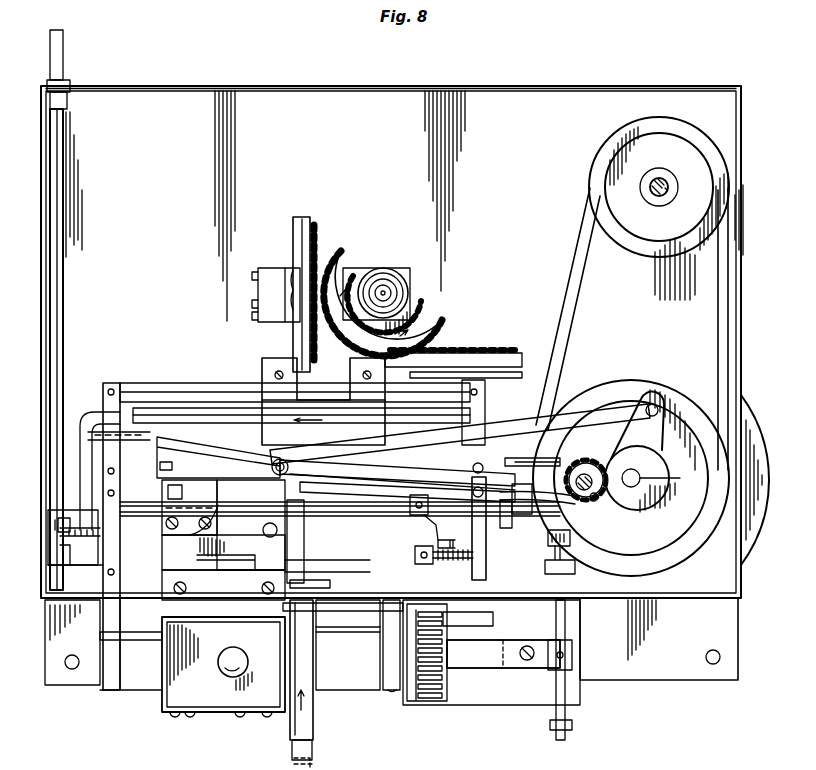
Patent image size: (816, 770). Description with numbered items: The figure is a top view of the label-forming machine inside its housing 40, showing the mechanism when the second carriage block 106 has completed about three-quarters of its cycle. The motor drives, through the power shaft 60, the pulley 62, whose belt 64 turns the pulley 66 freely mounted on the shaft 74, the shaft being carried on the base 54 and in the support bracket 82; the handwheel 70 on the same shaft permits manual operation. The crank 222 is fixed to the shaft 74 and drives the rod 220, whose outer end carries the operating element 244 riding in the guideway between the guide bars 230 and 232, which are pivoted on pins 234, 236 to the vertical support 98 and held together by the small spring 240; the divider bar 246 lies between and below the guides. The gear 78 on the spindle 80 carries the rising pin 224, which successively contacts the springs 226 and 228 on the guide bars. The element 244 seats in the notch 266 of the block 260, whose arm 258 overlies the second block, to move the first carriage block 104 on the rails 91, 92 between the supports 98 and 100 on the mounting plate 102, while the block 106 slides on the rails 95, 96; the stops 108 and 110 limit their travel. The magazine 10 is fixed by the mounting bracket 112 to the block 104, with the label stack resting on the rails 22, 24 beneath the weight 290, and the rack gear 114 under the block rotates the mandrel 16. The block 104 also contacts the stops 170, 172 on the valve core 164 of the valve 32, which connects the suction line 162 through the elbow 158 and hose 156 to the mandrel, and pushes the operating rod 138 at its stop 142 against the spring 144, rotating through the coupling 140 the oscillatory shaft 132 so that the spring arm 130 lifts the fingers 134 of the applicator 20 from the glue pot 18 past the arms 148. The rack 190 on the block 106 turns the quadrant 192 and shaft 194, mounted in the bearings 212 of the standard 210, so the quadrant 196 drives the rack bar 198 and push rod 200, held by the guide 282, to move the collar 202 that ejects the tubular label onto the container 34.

The magazine 10 is at (177, 725).
The rotary mandrel 16 is at (302, 673).
The glue pot 18 is at (582, 655).
The glue applicator 20 is at (318, 606).
The rail 22 is at (352, 690).
The rail 24 is at (345, 632).
The valve 32 is at (64, 533).
The container 34 is at (314, 758).
The housing 40 is at (271, 78).
The base 54 is at (183, 102).
The power shaft 60 is at (658, 194).
The pulley 62 is at (652, 240).
The belt 64 is at (567, 299).
The pulley 66 is at (682, 553).
The handwheel 70 is at (757, 515).
The shaft 74 is at (660, 477).
The gear 78 is at (587, 472).
The spindle 80 is at (580, 470).
The support bracket 82 is at (525, 500).
The rail 91 is at (150, 590).
The rail 92 is at (218, 496).
The rail 95 is at (166, 385).
The rail 96 is at (225, 474).
The vertical support 98 is at (486, 573).
The vertical support 100 is at (114, 385).
The mounting plate 102 is at (466, 404).
The first carriage block 104 is at (292, 558).
The second carriage block 106 is at (378, 420).
The adjustable stop screw 108 is at (90, 548).
The stop 110 is at (95, 440).
The mounting bracket 112 is at (205, 625).
The rack gear 114 is at (285, 532).
The spring arm 130 is at (490, 665).
The oscillatory shaft 132 is at (566, 620).
The fingers 134 is at (448, 616).
The operating rod 138 is at (504, 524).
The bifurcated coupling 140 is at (580, 544).
The stop 142 is at (418, 556).
The spring 144 is at (440, 522).
The arms 148 is at (440, 612).
The flexible hose 156 is at (190, 420).
The elbow 158 is at (80, 410).
The suction line 162 is at (63, 312).
The valve core 164 is at (366, 505).
The first stop 170 is at (418, 518).
The second stop 172 is at (140, 540).
The rack 190 is at (468, 357).
The quadrant 192 is at (428, 288).
The shaft 194 is at (392, 290).
The quadrant gear 196 is at (358, 258).
The rack bar 198 is at (318, 242).
The push rod 200 is at (300, 218).
The collar 202 is at (310, 720).
The standard 210 is at (263, 293).
The anti-friction bearings 212 is at (392, 283).
The rod 220 is at (560, 418).
The crank 222 is at (655, 441).
The pin 224 is at (594, 502).
The spring 226 is at (565, 496).
The leaf spring 228 is at (530, 458).
The guide bar 230 is at (404, 490).
The guide bar 232 is at (420, 470).
The pivot pin 234 is at (476, 498).
The pivot pin 236 is at (478, 462).
The spring 240 is at (358, 470).
The operating element 244 is at (288, 467).
The divider bar 246 is at (452, 470).
The arm 258 is at (165, 464).
The block 260 is at (190, 530).
The notch 266 is at (221, 530).
The guide 282 is at (293, 272).
The weight 290 is at (228, 700).